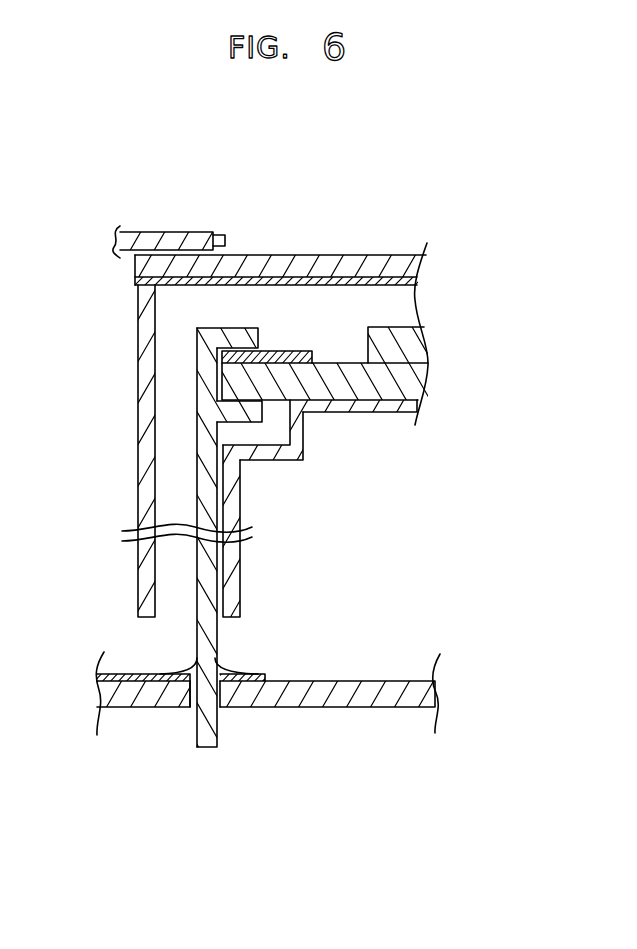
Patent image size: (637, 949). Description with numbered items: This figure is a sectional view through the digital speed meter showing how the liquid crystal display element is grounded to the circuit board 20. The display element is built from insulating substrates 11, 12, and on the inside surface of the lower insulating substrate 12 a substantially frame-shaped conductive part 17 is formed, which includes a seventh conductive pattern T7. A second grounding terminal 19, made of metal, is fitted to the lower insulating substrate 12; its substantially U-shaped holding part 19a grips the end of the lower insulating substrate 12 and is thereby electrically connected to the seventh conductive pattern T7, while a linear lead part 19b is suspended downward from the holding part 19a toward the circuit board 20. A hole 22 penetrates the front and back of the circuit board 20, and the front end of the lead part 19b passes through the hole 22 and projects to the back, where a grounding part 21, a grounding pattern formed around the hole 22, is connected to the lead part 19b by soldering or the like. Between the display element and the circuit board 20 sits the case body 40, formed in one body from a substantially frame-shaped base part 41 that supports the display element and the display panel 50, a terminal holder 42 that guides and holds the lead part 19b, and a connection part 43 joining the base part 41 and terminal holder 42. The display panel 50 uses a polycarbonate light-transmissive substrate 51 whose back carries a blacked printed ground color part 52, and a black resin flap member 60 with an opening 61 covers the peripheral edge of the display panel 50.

The insulating substrate 11 is at (407, 345).
The lower insulating substrate 12 is at (402, 383).
The conductive part 17 is at (220, 354).
The seventh conductive pattern T7 is at (182, 346).
The second grounding terminal 19 is at (176, 473).
The holding part 19a is at (250, 413).
The lead part 19b is at (208, 567).
The circuit board 20 is at (259, 693).
The grounding part 21 is at (128, 677).
The hole 22 is at (185, 698).
The case body 40 is at (269, 506).
The base part 41 is at (386, 405).
The terminal holder 42 is at (147, 472).
The connection part 43 is at (300, 440).
The display panel 50 is at (267, 249).
The light-transmissive substrate 51 is at (385, 270).
The ground color part 52 is at (412, 282).
The flap member 60 is at (148, 245).
The opening 61 is at (222, 236).